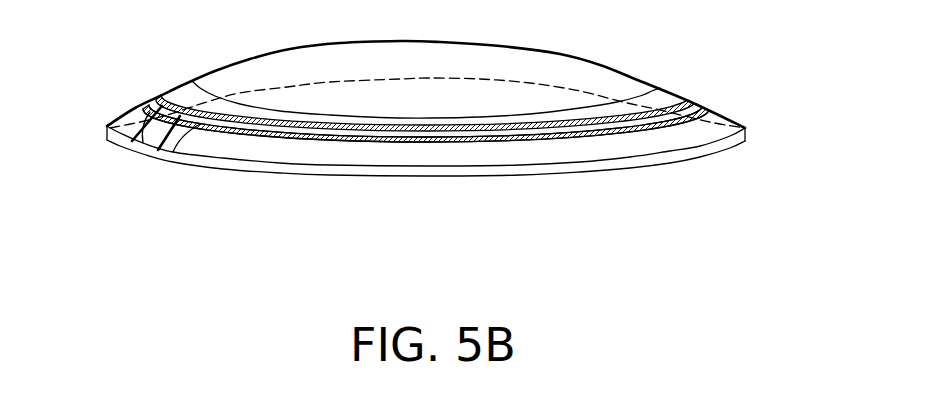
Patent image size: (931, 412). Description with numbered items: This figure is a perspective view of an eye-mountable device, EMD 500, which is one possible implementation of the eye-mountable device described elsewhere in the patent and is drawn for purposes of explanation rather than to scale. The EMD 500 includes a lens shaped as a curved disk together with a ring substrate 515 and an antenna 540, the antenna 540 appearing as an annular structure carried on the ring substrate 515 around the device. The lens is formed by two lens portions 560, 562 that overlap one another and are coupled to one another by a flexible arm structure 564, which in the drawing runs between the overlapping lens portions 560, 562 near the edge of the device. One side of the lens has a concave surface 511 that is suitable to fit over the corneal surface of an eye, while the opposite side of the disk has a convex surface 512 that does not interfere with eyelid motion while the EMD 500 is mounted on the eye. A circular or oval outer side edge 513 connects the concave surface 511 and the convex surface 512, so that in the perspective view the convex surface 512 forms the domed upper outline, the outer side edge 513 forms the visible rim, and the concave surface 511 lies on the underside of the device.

The EMD 500 is at (420, 114).
The concave surface 511 is at (670, 150).
The convex surface 512 is at (507, 47).
The outer side edge 513 is at (568, 162).
The ring substrate 515 is at (147, 104).
The antenna 540 is at (690, 104).
The lens portion 560 is at (325, 150).
The lens portion 562 is at (612, 78).
The flexible arm structure 564 is at (182, 146).